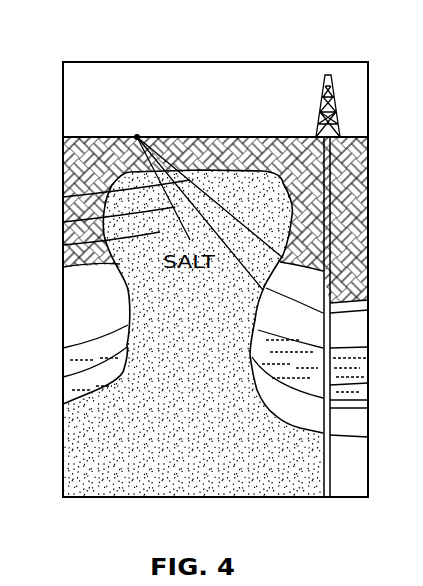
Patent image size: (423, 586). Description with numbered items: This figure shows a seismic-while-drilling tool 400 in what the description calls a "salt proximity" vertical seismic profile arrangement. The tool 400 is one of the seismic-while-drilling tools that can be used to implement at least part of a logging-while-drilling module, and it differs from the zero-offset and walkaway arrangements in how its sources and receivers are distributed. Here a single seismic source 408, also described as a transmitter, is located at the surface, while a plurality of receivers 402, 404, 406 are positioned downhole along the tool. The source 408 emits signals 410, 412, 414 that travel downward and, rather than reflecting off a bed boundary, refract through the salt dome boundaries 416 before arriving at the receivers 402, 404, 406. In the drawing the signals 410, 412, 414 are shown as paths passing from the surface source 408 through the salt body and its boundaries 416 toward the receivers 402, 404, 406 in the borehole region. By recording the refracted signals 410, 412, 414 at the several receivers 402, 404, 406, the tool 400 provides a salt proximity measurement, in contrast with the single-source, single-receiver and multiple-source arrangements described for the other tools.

The seismic-while-drilling tool 400 is at (259, 48).
The receiver 402 is at (370, 283).
The receiver 404 is at (360, 312).
The receiver 406 is at (350, 377).
The seismic source 408 is at (139, 134).
The signal 410 is at (64, 197).
The signal 412 is at (64, 222).
The signal 414 is at (64, 245).
The salt dome boundaries 416 is at (217, 152).